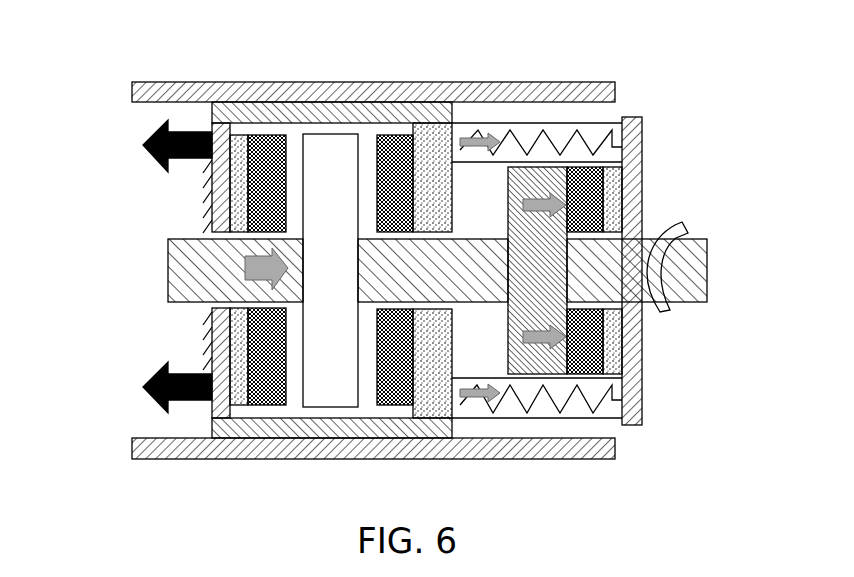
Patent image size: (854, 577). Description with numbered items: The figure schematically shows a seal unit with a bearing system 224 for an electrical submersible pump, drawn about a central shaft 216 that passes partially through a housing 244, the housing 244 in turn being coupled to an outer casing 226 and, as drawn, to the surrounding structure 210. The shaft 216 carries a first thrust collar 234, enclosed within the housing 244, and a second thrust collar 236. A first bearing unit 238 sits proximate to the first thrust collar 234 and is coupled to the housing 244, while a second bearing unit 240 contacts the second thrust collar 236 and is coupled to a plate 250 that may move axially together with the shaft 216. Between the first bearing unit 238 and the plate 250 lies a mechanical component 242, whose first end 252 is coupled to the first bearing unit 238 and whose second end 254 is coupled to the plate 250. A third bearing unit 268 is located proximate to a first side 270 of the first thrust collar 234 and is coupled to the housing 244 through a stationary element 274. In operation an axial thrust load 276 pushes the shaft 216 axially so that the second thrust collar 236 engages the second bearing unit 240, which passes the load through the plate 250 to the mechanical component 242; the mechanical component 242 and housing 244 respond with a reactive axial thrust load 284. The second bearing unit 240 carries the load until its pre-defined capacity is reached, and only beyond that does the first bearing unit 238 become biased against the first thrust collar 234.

The housing plate 210 is at (124, 94).
The shaft 216 is at (697, 268).
The bearing system 224 is at (688, 113).
The casing 226 is at (213, 90).
The first thrust collar 234 is at (336, 146).
The second thrust collar 236 is at (508, 225).
The first bearing unit 238 is at (407, 118).
The second bearing unit 240 is at (595, 388).
The mechanical component 242 is at (590, 125).
The housing 244 is at (430, 107).
The plate 250 is at (640, 182).
The first end 252 is at (453, 385).
The second end 254 is at (614, 422).
The third bearing unit 268 is at (249, 422).
The first side 270 is at (298, 398).
The stationary element 274 is at (213, 408).
The axial thrust load 276 is at (245, 268).
The reactive axial thrust load 284 is at (147, 390).